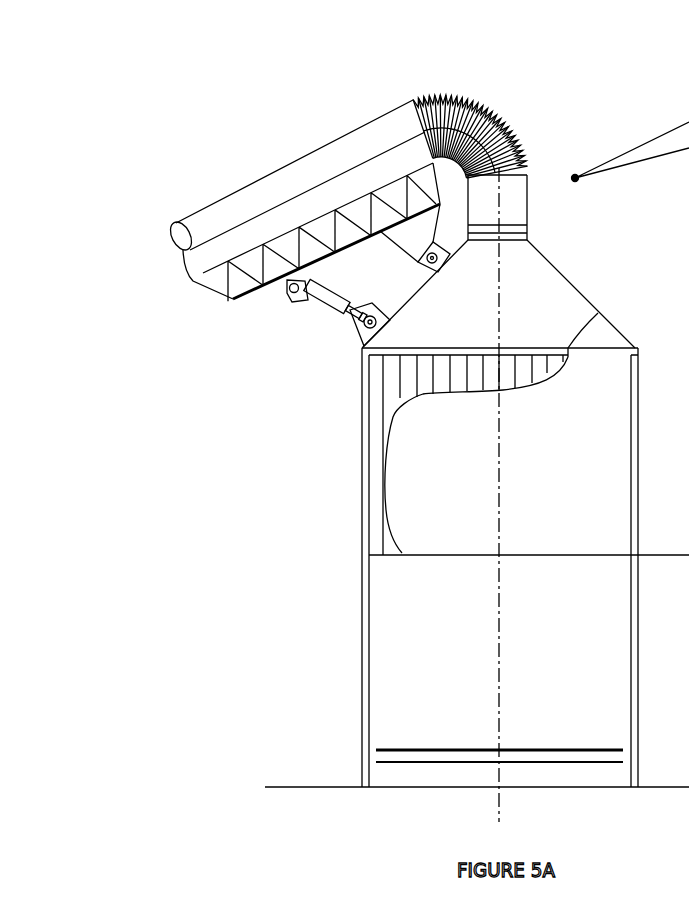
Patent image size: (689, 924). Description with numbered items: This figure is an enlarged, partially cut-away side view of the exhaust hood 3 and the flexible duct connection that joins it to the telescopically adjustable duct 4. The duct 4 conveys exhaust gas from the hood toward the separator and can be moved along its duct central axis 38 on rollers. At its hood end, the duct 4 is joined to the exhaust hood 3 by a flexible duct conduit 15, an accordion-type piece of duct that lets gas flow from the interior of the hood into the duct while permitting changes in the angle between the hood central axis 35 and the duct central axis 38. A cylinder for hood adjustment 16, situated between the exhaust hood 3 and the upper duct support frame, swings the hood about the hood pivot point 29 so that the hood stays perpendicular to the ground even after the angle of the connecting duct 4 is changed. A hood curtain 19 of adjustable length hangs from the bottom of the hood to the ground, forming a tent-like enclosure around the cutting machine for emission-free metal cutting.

The exhaust hood 3 is at (573, 280).
The telescopically adjustable duct 4 is at (287, 166).
The flexible duct conduit 15 is at (487, 103).
The cylinder for hood adjustment 16 is at (343, 315).
The hood curtain 19 is at (362, 603).
The hood pivot point 29 is at (437, 272).
The hood central axis 35 is at (500, 635).
The duct central axis 38 is at (247, 221).